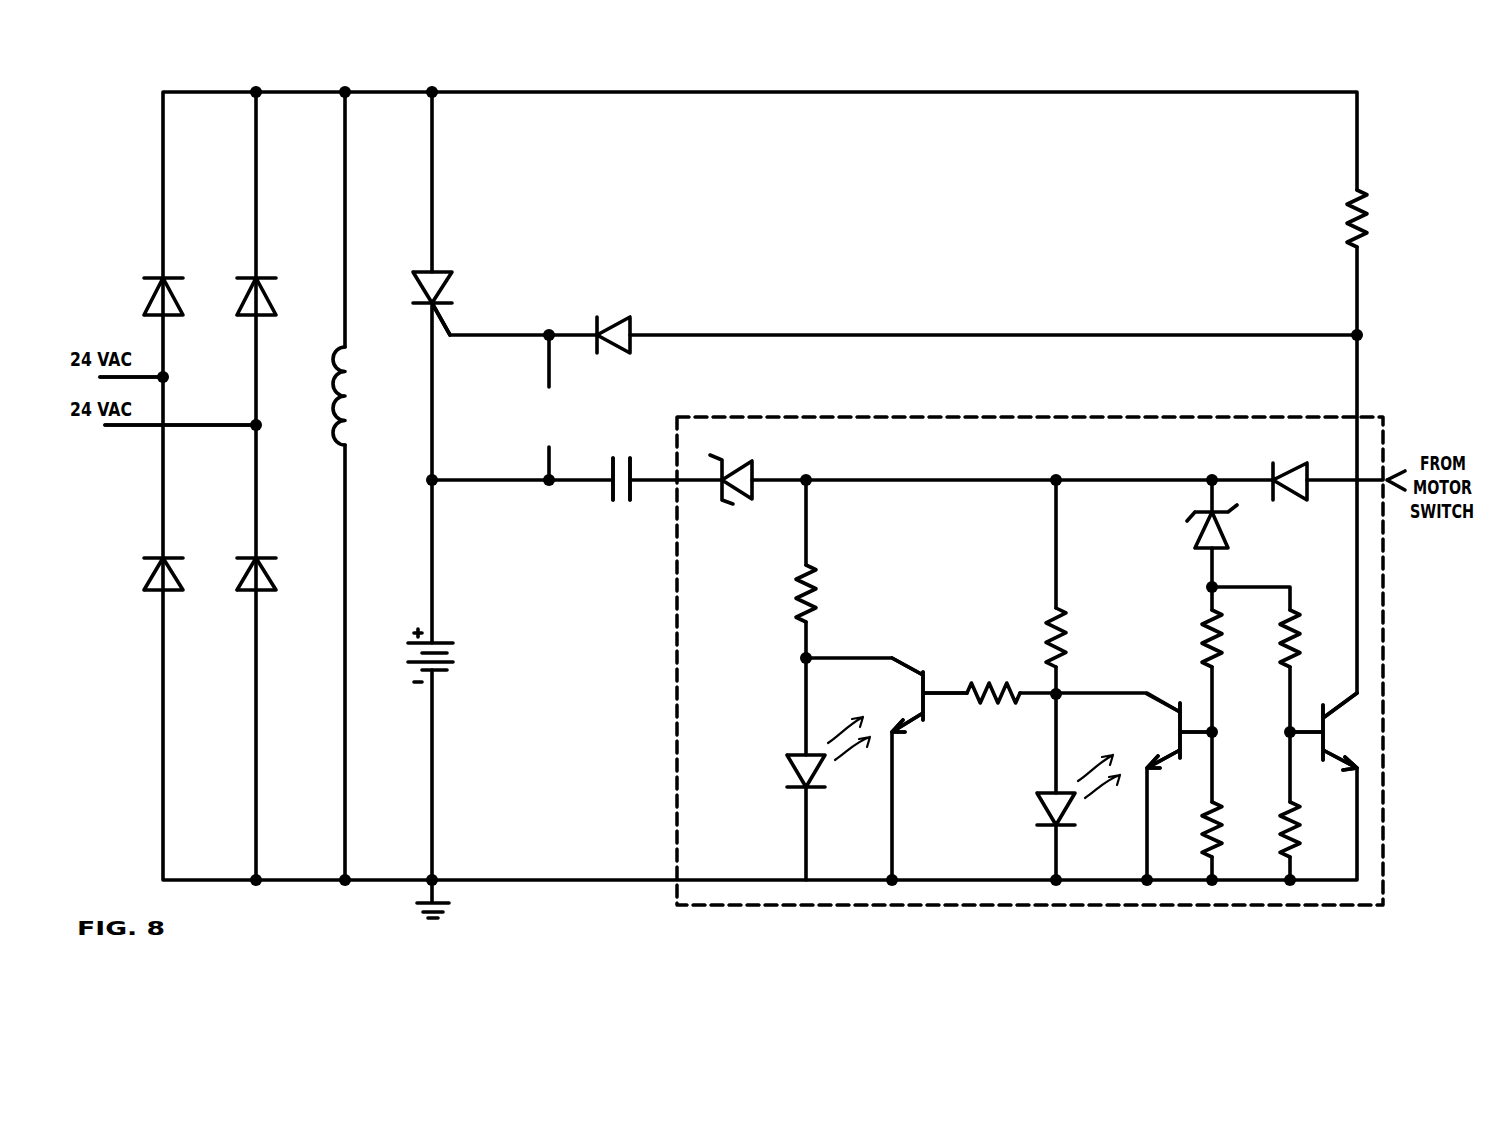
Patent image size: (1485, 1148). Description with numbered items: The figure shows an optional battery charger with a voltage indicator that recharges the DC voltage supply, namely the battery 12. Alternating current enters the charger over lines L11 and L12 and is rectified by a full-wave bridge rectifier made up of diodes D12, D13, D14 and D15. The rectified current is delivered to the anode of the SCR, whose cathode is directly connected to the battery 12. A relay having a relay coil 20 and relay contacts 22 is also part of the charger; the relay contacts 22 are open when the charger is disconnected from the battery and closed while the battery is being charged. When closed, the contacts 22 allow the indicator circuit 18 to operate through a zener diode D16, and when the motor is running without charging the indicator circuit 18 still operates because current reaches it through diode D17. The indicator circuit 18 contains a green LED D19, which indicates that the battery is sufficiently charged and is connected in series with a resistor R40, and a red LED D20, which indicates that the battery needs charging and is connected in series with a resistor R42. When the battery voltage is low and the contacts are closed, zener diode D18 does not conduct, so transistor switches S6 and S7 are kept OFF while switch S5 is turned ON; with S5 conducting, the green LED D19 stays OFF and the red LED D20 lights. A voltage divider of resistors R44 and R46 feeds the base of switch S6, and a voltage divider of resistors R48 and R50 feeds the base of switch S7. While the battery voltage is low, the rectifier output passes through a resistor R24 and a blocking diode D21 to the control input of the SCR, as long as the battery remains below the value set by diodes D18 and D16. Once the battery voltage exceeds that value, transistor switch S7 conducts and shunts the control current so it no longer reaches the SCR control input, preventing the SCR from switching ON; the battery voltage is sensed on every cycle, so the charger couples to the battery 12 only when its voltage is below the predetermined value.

The diode D12 is at (152, 298).
The diode D13 is at (266, 298).
The diode D14 is at (147, 600).
The diode D15 is at (266, 600).
The line L11 is at (145, 362).
The line L12 is at (148, 432).
The relay coil 20 is at (352, 375).
The element SCR is at (440, 287).
The blocking diode D21 is at (630, 318).
The relay contacts 22 is at (612, 468).
The battery 12 is at (453, 660).
The resistor R24 is at (1352, 216).
The indicator circuit 18 is at (675, 745).
The zener diode D16 is at (750, 500).
The resistor R40 is at (818, 597).
The switch S5 is at (930, 685).
The LED D19 is at (785, 755).
The resistor R42 is at (1050, 630).
The LED D20 is at (1038, 795).
The zener diode D18 is at (1196, 545).
The resistor R44 is at (1203, 630).
The diode D17 is at (1300, 500).
The resistor R48 is at (1300, 632).
The transistor switch S6 is at (1188, 748).
The resistor R46 is at (1222, 832).
The transistor switch S7 is at (1327, 722).
The resistor R50 is at (1300, 850).